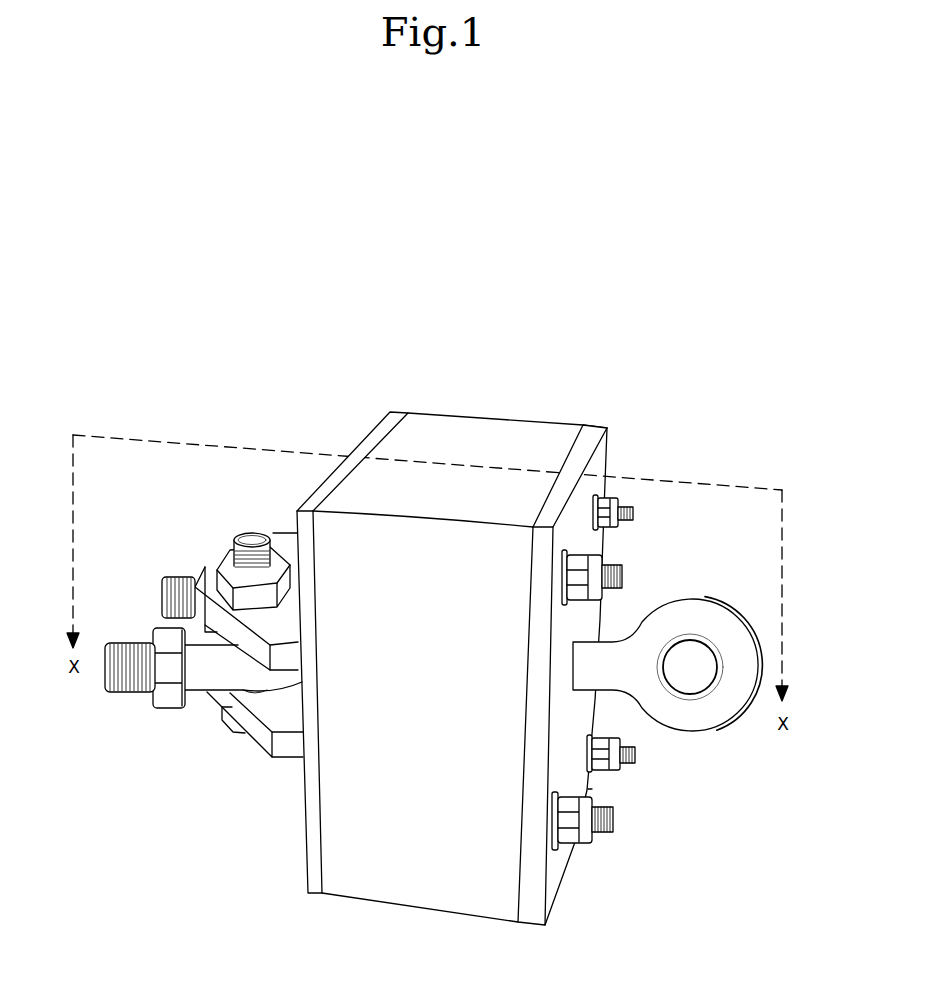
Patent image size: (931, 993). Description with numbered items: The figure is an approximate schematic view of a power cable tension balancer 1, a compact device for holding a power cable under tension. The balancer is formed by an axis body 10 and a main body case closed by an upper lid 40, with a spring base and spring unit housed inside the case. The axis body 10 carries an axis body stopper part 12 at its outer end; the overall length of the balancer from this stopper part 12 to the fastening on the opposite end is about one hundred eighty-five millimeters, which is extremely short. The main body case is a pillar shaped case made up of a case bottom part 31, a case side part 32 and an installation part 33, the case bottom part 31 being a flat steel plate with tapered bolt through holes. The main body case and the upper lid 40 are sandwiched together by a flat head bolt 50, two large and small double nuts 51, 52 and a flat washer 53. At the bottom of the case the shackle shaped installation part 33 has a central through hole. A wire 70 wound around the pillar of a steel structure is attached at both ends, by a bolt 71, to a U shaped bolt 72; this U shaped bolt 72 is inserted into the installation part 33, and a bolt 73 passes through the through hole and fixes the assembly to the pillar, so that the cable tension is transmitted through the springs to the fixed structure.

The power cable tension balancer 1 is at (473, 588).
The axis body 10 is at (667, 657).
The axis body stopper part 12 is at (690, 697).
The case bottom part 31 is at (383, 424).
The case side part 32 is at (373, 882).
The installation part 33 is at (290, 548).
The upper lid 40 is at (598, 462).
The bolt 50 is at (635, 753).
The nut 51 is at (563, 800).
The nut 52 is at (596, 837).
The flat washer 53 is at (562, 848).
The wire 70 is at (115, 678).
The bolt 71 is at (167, 700).
The U shaped bolt 72 is at (202, 678).
The bolt 73 is at (248, 535).